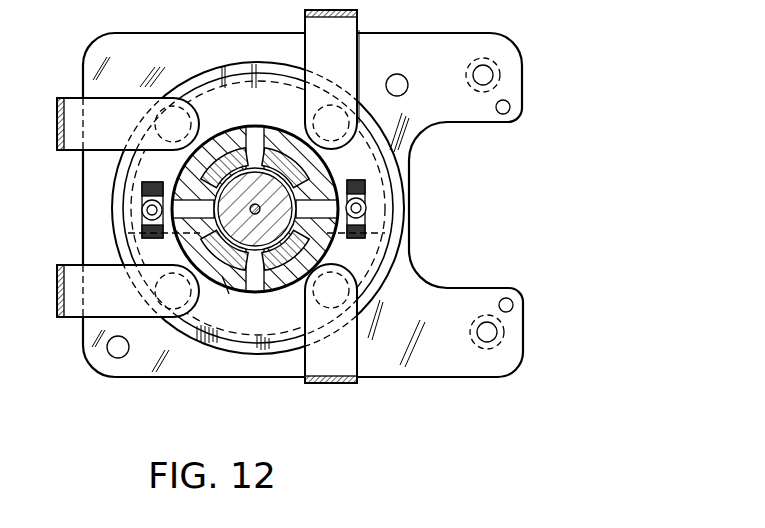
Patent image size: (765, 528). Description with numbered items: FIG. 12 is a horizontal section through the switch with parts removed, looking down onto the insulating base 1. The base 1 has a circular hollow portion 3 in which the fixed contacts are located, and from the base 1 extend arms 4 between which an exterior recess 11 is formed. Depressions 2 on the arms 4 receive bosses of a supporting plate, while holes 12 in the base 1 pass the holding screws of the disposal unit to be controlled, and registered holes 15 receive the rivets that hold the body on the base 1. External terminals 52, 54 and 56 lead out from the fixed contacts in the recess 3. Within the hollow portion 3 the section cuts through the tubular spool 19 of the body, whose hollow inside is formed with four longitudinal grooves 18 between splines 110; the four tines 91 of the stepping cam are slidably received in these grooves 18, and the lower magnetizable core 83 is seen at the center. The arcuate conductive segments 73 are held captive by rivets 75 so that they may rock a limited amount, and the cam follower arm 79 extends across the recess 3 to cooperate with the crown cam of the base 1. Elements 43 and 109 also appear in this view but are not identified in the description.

The insulating base 1 is at (160, 378).
The depressions 2 is at (503, 114).
The circular hollow portion 3 is at (203, 78).
The arms 4 is at (466, 34).
The exterior recess 11 is at (453, 123).
The holes 12 is at (477, 84).
The registered holes 15 is at (406, 78).
The longitudinal grooves 18 is at (228, 135).
The tubular spool 19 is at (229, 294).
The lower lever arm 43 is at (318, 386).
The external terminal 52 is at (358, 13).
The external terminal 54 is at (57, 128).
The external terminal 56 is at (57, 292).
The arcuate conductive segments 73 is at (122, 170).
The rivet 75 is at (141, 210).
The cam follower arm 79 is at (243, 125).
The lower magnetizable core 83 is at (257, 123).
The tines 91 is at (205, 168).
The slot 109 is at (197, 155).
The splines 110 is at (165, 232).